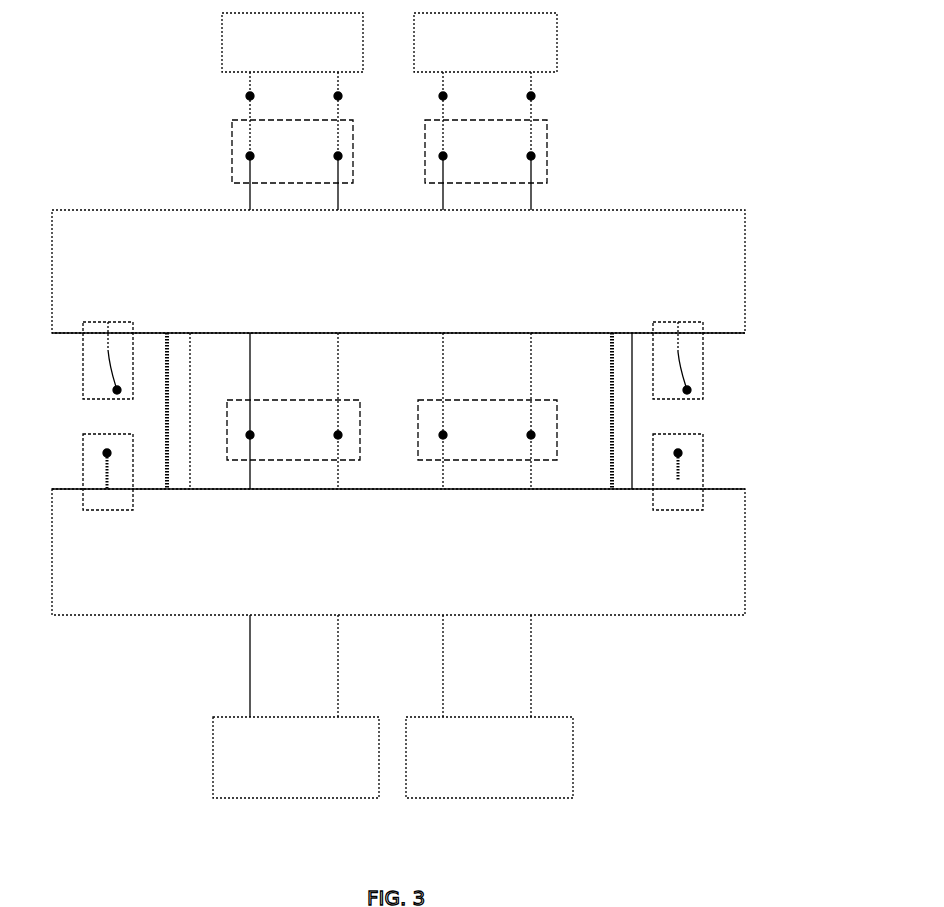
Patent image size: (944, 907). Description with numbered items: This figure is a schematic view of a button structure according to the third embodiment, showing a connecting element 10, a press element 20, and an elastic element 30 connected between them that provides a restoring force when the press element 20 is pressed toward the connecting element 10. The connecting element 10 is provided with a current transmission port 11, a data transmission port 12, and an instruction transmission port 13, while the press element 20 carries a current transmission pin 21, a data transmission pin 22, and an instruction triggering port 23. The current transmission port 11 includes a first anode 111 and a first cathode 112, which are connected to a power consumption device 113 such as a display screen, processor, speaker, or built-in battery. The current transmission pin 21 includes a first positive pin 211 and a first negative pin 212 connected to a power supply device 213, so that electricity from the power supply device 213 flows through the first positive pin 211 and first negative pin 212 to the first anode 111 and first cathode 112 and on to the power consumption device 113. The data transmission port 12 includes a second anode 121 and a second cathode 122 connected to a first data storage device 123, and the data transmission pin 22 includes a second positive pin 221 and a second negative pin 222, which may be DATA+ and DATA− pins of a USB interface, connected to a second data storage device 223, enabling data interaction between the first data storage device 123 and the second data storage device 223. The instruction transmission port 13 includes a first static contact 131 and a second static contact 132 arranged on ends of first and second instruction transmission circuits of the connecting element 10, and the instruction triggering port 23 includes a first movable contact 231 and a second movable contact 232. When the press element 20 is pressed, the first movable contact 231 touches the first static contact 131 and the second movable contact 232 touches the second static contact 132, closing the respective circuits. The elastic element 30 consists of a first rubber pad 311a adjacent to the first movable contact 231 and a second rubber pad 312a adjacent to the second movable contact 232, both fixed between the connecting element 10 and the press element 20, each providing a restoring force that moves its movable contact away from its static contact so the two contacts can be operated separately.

The connecting element 10 is at (703, 595).
The current transmission port 11 is at (228, 418).
The data transmission port 12 is at (538, 413).
The instruction transmission port 13 is at (85, 448).
The press element 20 is at (713, 285).
The current transmission pin 21 is at (238, 174).
The data transmission pin 22 is at (547, 172).
The instruction triggering port 23 is at (88, 330).
The elastic element 30 is at (367, 381).
The first anode 111 is at (250, 480).
The first cathode 112 is at (338, 480).
The power consumption device 113 is at (235, 783).
The second anode 121 is at (443, 480).
The second cathode 122 is at (531, 480).
The first data storage device 123 is at (553, 782).
The first static contact 131 is at (107, 482).
The second static contact 132 is at (678, 480).
The first positive pin 211 is at (250, 197).
The first negative pin 212 is at (338, 197).
The power supply device 213 is at (238, 50).
The second positive pin 221 is at (443, 200).
The second negative pin 222 is at (531, 200).
The second data storage device 223 is at (551, 55).
The first movable contact 231 is at (106, 353).
The second movable contact 232 is at (678, 352).
The first rubber pad 311a is at (178, 348).
The second rubber pad 312a is at (618, 348).